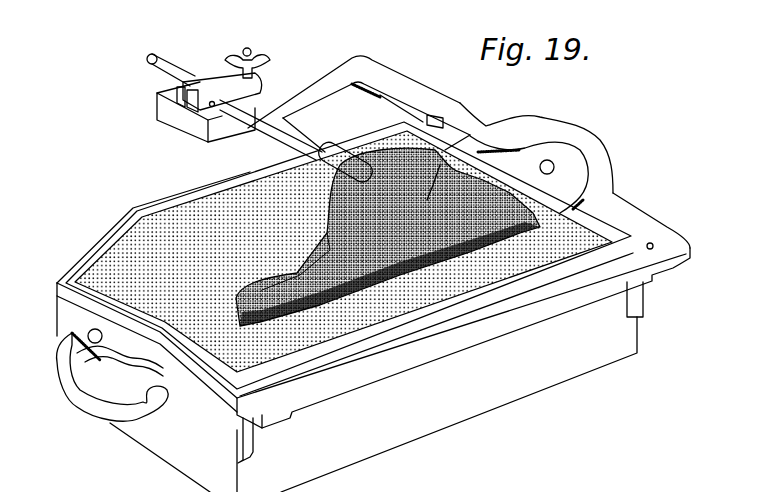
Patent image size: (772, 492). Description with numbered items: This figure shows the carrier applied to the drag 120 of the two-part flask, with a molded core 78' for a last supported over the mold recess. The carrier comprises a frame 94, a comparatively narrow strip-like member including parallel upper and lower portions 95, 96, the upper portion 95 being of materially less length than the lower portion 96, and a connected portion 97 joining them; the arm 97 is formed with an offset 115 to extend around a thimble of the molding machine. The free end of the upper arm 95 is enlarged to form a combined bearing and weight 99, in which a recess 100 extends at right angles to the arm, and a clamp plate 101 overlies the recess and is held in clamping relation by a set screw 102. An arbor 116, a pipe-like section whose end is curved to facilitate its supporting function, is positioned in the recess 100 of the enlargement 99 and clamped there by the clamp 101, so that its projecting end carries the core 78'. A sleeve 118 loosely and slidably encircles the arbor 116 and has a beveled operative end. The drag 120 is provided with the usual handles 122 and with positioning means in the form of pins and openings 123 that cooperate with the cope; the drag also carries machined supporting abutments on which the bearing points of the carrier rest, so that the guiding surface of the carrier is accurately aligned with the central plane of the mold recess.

The core 78' is at (388, 210).
The frame 94 is at (673, 243).
The upper portion 95 is at (312, 79).
The lower portion 96 is at (490, 322).
The connected portion 97 is at (455, 111).
The combined bearing and weight 99 is at (178, 119).
The recess 100 is at (244, 133).
The clamp plate 101 is at (209, 78).
The set screw 102 is at (249, 51).
The offset 115 is at (575, 123).
The arbor 116 is at (298, 147).
The sleeve 118 is at (346, 165).
The drag 120 is at (350, 387).
The handles 122 is at (72, 393).
The pins and openings 123 is at (552, 163).